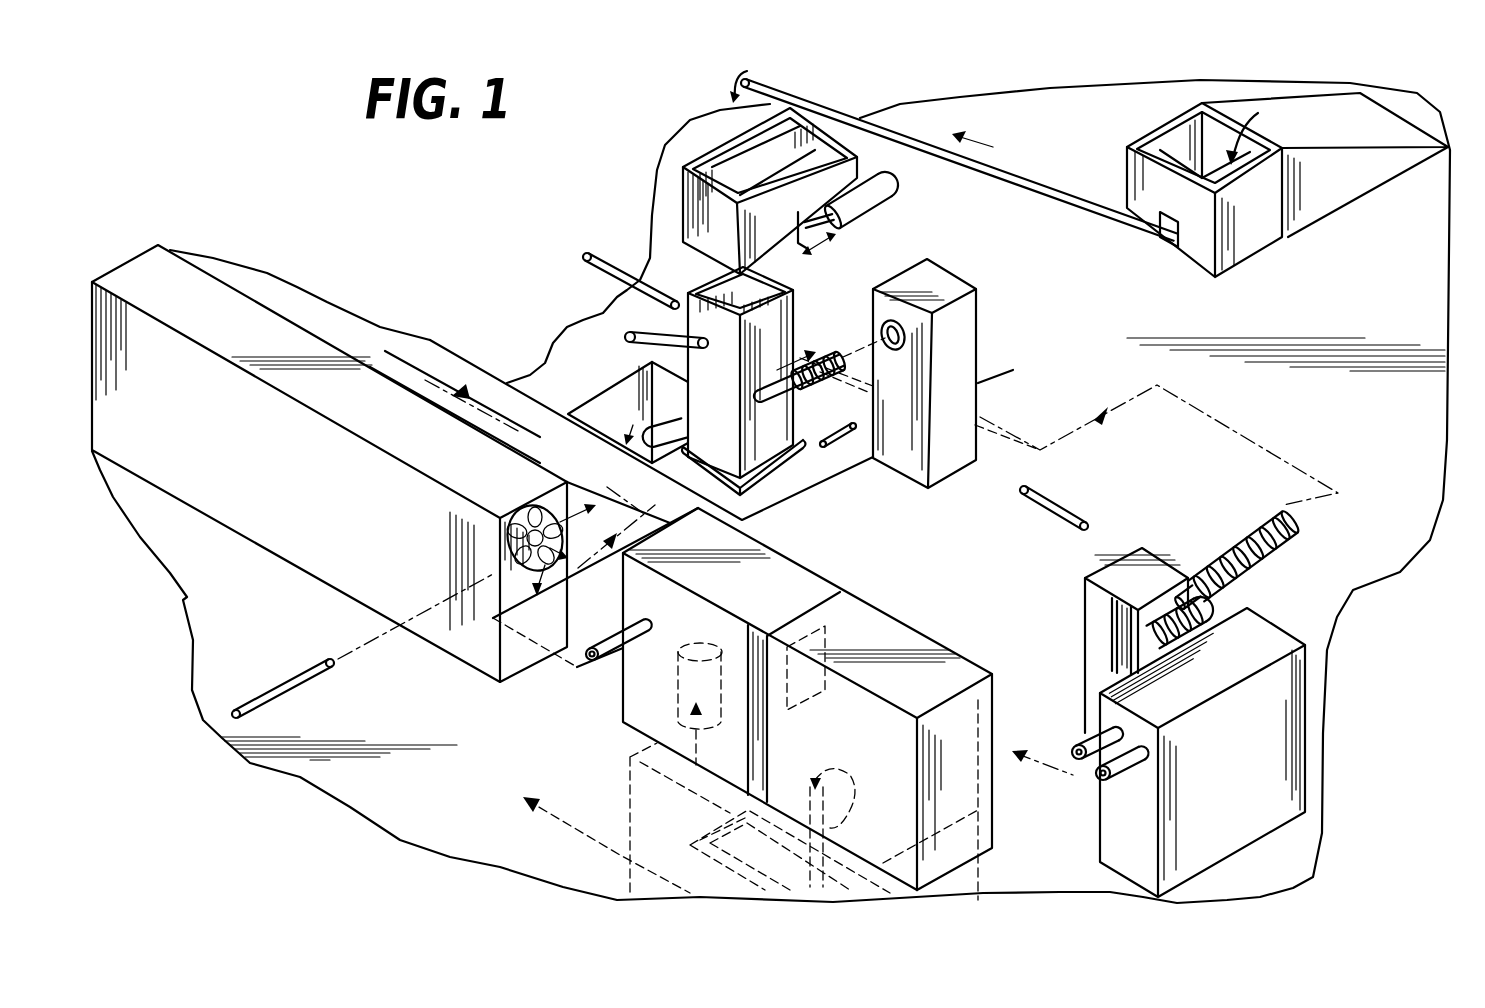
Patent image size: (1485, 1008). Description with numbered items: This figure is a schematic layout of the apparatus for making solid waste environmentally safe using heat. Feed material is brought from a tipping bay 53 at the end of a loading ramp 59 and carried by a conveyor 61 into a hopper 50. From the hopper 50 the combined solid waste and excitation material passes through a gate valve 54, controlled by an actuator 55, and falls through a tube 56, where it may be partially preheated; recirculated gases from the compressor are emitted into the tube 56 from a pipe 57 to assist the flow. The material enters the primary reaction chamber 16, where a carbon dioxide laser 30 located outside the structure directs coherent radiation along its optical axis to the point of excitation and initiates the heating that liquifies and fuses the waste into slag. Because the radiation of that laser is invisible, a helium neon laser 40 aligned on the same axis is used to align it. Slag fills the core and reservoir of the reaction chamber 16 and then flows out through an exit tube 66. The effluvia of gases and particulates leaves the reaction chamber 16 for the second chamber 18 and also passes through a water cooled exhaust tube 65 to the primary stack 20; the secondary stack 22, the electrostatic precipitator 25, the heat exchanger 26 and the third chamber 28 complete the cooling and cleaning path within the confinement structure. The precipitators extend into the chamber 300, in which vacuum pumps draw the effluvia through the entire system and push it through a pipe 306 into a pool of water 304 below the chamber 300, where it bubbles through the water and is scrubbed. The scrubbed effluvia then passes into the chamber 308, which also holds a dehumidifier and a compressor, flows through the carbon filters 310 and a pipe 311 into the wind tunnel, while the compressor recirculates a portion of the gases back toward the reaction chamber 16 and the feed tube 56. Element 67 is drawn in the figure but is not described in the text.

The primary reaction chamber 16 is at (773, 421).
The second chamber 18 is at (870, 390).
The primary stack 20 is at (967, 320).
The secondary stack 22 is at (1095, 600).
The electrostatic precipitator 25 is at (910, 332).
The heat exchanger 26 is at (1216, 596).
The third chamber 28 is at (1307, 643).
The carbon dioxide laser 30 is at (630, 272).
The helium neon laser 40 is at (1060, 505).
The hopper 50 is at (683, 188).
The tipping bay 53 is at (1173, 148).
The gate valve 54 is at (787, 252).
The actuator 55 is at (887, 195).
The tube 56 is at (712, 284).
The pipe 57 is at (627, 338).
The loading ramp 59 is at (1343, 132).
The conveyor 61 is at (1025, 192).
The water cooled exhaust tube 65 is at (830, 360).
The exit tube 66 is at (662, 425).
The pin 67 is at (826, 447).
The chamber 300 is at (910, 640).
The pool of water 304 is at (628, 797).
The pipe 306 is at (858, 828).
The chamber 308 is at (792, 570).
The carbon filter 310 is at (658, 633).
The pipe 311 is at (596, 662).